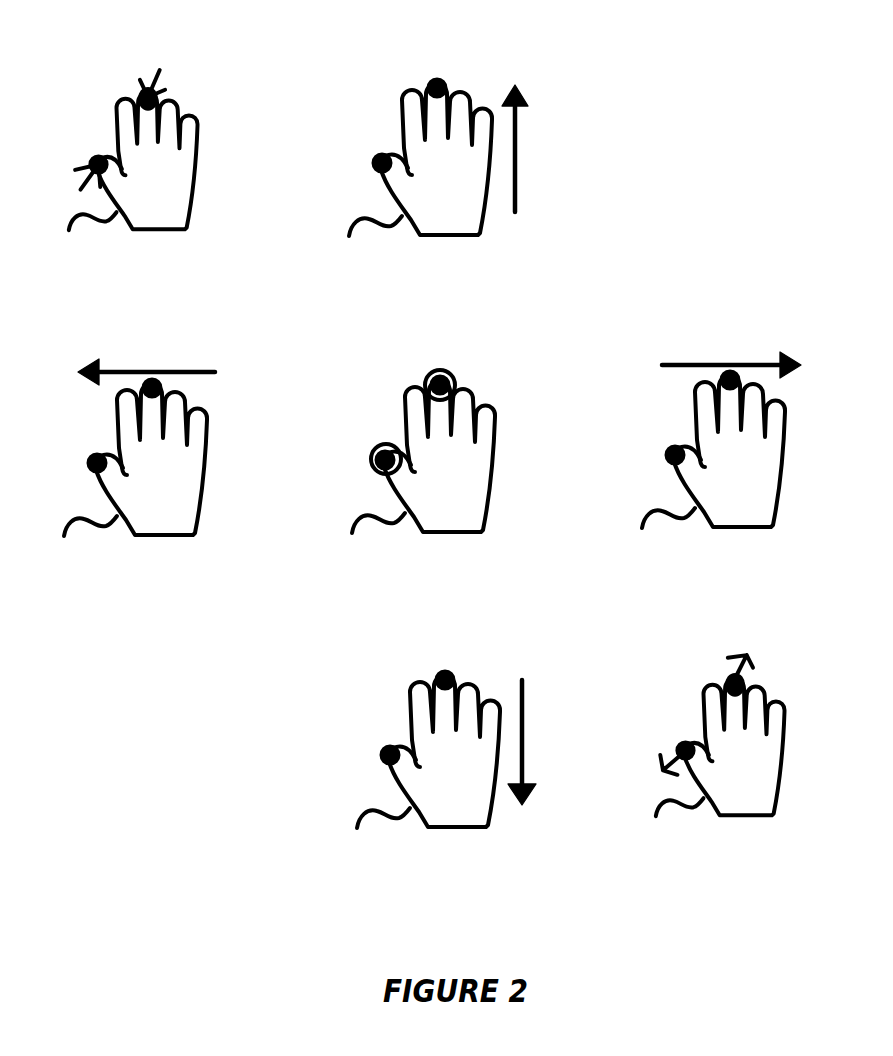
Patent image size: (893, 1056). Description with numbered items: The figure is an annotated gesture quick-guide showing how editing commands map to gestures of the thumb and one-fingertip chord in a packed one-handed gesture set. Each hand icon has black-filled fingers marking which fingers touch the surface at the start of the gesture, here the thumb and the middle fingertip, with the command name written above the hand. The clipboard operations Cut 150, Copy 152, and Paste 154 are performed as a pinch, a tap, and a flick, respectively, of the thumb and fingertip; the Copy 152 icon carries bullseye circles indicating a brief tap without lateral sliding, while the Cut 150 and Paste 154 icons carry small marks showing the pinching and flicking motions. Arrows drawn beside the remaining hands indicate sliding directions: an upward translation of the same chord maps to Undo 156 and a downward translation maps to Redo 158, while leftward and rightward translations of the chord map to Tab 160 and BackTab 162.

The Cut 150 is at (133, 155).
The Copy 152 is at (423, 447).
The Paste 154 is at (720, 739).
The Undo 156 is at (438, 151).
The Redo 158 is at (446, 741).
The Tab 160 is at (721, 443).
The BackTab 162 is at (143, 450).